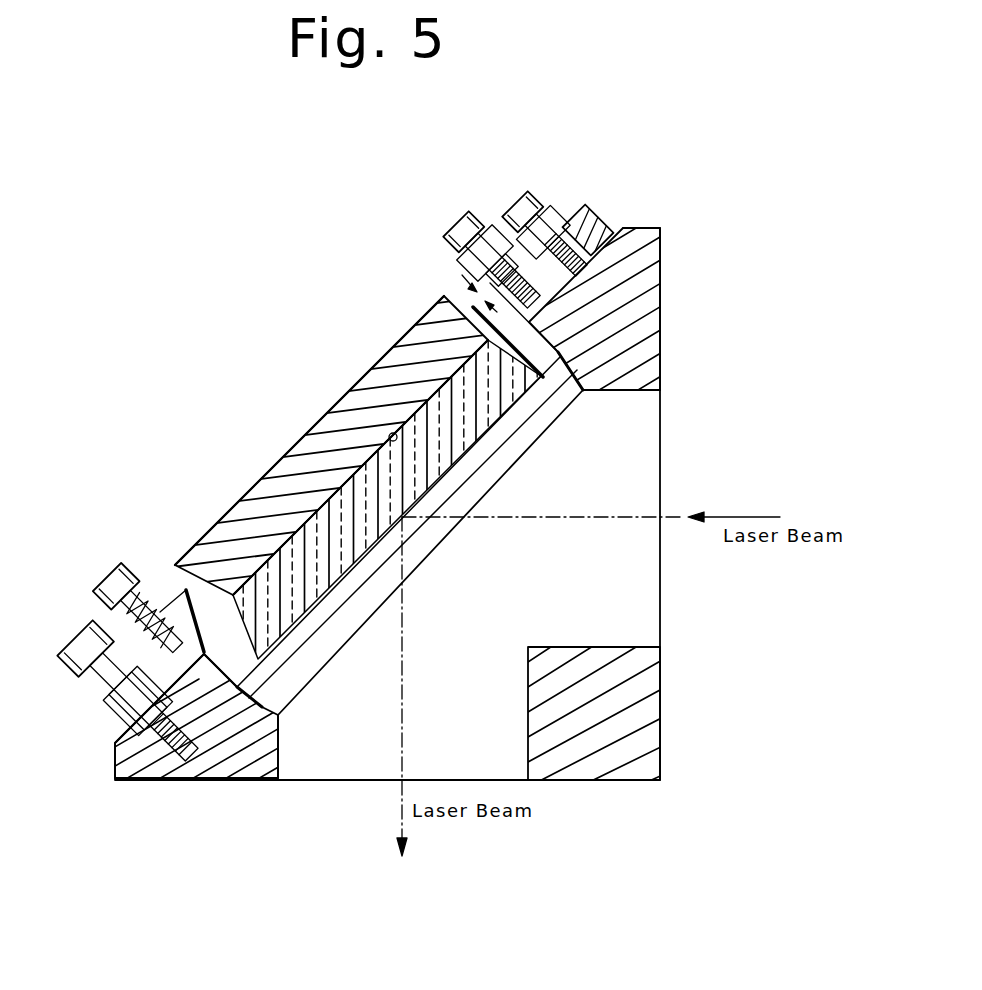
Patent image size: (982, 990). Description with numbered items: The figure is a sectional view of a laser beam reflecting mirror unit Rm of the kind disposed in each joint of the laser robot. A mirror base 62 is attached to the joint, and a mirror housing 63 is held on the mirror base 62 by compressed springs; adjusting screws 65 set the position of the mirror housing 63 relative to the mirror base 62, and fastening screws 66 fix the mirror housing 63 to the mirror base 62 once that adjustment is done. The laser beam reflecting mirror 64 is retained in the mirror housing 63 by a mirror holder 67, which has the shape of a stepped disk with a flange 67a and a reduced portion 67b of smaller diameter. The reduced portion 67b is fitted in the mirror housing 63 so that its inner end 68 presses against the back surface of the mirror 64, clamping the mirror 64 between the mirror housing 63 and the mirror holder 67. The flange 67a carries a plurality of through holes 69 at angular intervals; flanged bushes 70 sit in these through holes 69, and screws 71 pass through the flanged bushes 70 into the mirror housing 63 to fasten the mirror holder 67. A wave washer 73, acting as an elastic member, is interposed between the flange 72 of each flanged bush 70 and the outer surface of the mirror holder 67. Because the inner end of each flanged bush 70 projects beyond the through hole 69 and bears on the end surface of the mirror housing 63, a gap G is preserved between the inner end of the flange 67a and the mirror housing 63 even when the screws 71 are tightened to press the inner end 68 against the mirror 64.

The mirror base 62 is at (122, 763).
The mirror housing 63 is at (556, 352).
The laser beam reflecting mirror 64 is at (473, 410).
The adjusting screws 65 is at (532, 200).
The fastening screws 66 is at (592, 222).
The mirror holder 67 is at (440, 374).
The flange 67a is at (305, 431).
The reduced portion 67b is at (473, 340).
The inner end 68 is at (391, 432).
The through holes 69 is at (165, 597).
The flanged bushes 70 is at (117, 607).
The screws 71 is at (462, 222).
The flange 72 is at (135, 572).
The wave washer 73 is at (153, 585).
The laser beam reflecting mirror unit Rm is at (668, 611).
The gap G is at (490, 304).